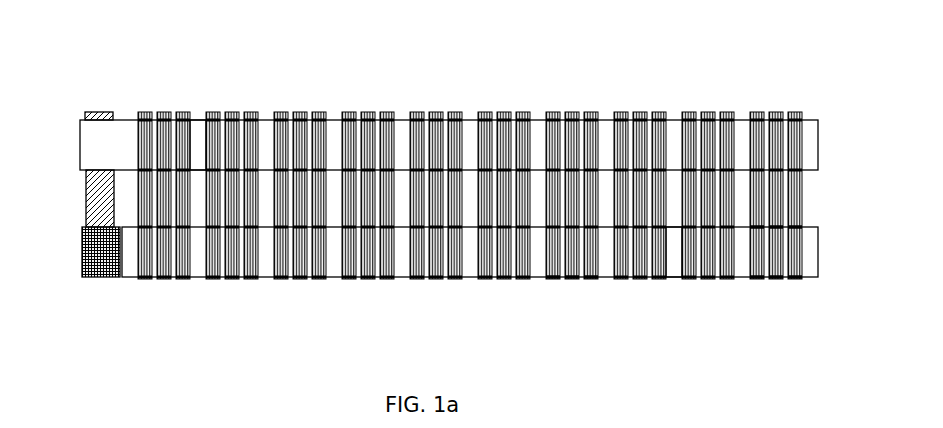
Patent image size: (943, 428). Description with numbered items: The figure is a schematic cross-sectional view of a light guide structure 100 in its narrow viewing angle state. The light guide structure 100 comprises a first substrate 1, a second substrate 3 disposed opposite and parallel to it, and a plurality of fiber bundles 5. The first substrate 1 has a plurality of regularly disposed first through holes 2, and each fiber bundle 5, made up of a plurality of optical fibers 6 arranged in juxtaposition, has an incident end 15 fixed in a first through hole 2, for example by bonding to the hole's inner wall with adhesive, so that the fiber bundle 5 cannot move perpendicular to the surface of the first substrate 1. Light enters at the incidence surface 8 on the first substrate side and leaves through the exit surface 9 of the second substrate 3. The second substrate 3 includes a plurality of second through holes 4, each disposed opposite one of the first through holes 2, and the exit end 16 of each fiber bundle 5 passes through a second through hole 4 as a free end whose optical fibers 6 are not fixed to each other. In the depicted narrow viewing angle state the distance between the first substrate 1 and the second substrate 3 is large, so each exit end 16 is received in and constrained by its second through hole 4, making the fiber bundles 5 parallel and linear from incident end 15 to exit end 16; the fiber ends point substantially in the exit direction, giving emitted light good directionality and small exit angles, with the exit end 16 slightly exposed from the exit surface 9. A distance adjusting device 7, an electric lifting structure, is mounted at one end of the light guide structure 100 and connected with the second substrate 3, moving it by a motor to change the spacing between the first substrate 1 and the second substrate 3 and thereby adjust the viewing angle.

The light guide structure 100 is at (70, 36).
The first substrate 1 is at (818, 260).
The first through hole 2 is at (568, 277).
The second substrate 3 is at (818, 127).
The second through hole 4 is at (562, 123).
The fiber bundle 5 is at (277, 110).
The optical fiber 6 is at (392, 118).
The distance adjusting device 7 is at (83, 240).
The incidence surface 8 is at (672, 277).
The exit surface 9 is at (200, 118).
The incident end 15 is at (775, 265).
The exit end 16 is at (762, 130).